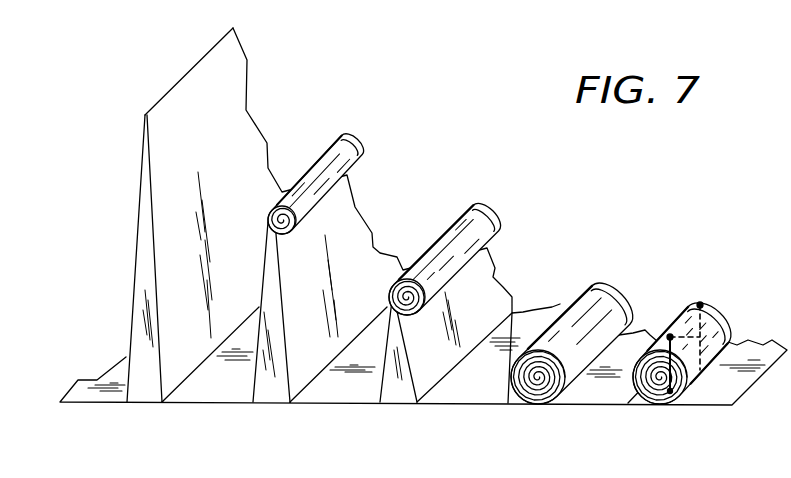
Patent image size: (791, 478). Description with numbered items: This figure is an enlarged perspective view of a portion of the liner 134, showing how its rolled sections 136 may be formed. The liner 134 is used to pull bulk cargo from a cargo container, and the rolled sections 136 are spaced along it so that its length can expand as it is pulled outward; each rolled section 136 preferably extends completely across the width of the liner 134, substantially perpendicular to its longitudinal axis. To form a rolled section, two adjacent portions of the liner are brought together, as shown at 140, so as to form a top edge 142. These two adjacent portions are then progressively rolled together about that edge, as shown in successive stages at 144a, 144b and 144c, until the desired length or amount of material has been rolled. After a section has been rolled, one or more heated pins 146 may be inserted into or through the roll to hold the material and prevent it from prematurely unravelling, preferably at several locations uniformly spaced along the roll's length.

The liner 134 is at (548, 286).
The rolled section 136 is at (703, 378).
The adjacent portions of liner brought together 140 is at (129, 256).
The top edge 142 is at (178, 83).
The first stage of rolling 144a is at (363, 137).
The second stage of rolling 144b is at (485, 203).
The third stage of rolling 144c is at (612, 284).
The heated pin 146 is at (734, 326).